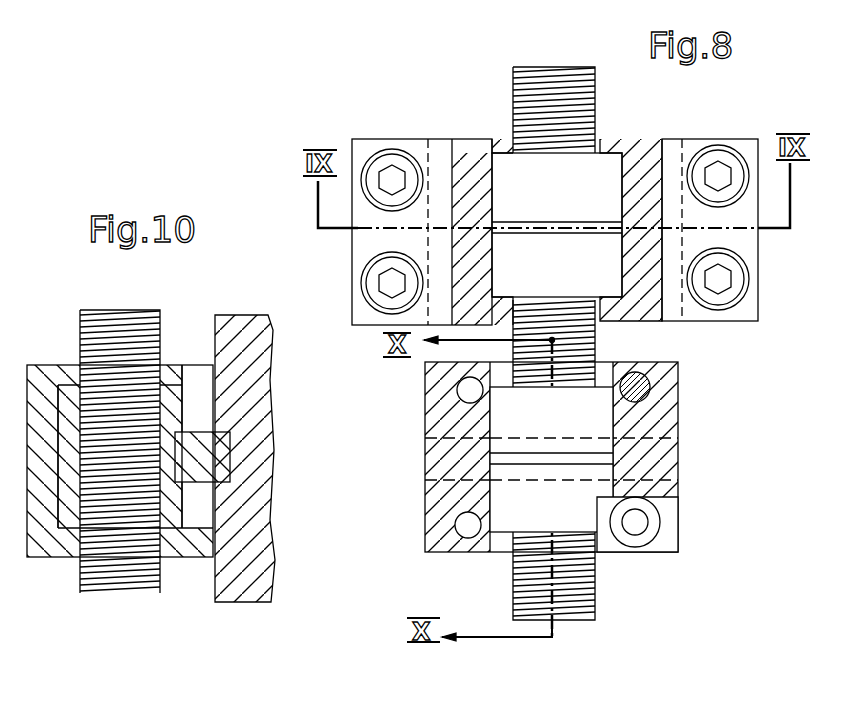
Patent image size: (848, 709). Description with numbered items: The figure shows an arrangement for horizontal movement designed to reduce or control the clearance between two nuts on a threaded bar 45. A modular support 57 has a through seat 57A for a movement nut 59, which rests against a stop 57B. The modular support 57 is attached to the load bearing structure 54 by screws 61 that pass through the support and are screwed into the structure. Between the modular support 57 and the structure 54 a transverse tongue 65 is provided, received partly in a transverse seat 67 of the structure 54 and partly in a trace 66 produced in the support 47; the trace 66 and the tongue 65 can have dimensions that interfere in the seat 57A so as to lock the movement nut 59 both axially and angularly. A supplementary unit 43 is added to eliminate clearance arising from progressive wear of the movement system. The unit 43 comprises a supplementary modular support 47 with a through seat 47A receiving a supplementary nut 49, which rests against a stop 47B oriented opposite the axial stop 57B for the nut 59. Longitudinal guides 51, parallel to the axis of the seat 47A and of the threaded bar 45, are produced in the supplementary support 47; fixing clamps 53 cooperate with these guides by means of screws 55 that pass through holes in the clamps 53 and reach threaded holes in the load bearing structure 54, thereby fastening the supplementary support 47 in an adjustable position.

In FIG. 8, the supplementary unit 43 is at (470, 132).
In FIG. 8, the threaded bar 45 is at (517, 85).
In FIG. 10, the threaded bar 45 is at (125, 591).
In FIG. 8, the supplementary modular support 47 is at (470, 140).
In FIG. 8, the through seat 47A is at (603, 140).
In FIG. 8, the stop 47B is at (612, 297).
In FIG. 8, the supplementary nut 49 is at (575, 206).
In FIG. 8, the longitudinal guides 51 is at (682, 150).
In FIG. 8, the fixing clamps 53 is at (352, 258).
In FIG. 8, the screws 55 is at (380, 292).
In FIG. 10, the load bearing structure 54 is at (212, 335).
In FIG. 8, the modular support 57 is at (681, 547).
In FIG. 10, the modular support 57 is at (25, 392).
In FIG. 8, the through seat 57A is at (496, 553).
In FIG. 10, the through seat 57A is at (213, 335).
In FIG. 8, the stop 57B is at (607, 392).
In FIG. 10, the stop 57B is at (58, 519).
In FIG. 8, the movement nut 59 is at (503, 427).
In FIG. 10, the movement nut 59 is at (68, 390).
In FIG. 8, the screws 61 is at (650, 387).
In FIG. 10, the transverse tongue 65 is at (218, 458).
In FIG. 8, the trace 66 is at (424, 466).
In FIG. 10, the trace 66 is at (240, 440).
In FIG. 10, the transverse seat 67 is at (226, 484).